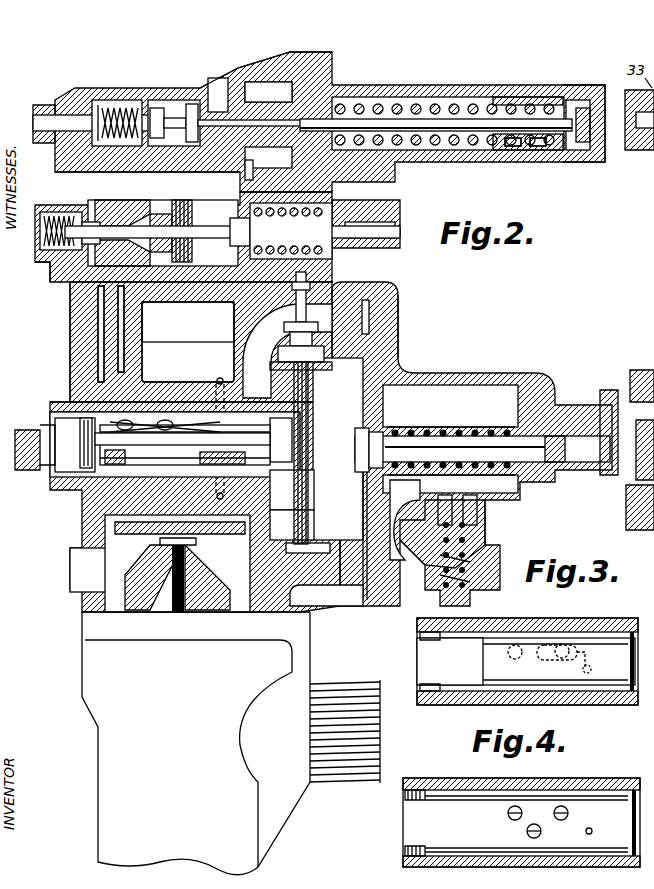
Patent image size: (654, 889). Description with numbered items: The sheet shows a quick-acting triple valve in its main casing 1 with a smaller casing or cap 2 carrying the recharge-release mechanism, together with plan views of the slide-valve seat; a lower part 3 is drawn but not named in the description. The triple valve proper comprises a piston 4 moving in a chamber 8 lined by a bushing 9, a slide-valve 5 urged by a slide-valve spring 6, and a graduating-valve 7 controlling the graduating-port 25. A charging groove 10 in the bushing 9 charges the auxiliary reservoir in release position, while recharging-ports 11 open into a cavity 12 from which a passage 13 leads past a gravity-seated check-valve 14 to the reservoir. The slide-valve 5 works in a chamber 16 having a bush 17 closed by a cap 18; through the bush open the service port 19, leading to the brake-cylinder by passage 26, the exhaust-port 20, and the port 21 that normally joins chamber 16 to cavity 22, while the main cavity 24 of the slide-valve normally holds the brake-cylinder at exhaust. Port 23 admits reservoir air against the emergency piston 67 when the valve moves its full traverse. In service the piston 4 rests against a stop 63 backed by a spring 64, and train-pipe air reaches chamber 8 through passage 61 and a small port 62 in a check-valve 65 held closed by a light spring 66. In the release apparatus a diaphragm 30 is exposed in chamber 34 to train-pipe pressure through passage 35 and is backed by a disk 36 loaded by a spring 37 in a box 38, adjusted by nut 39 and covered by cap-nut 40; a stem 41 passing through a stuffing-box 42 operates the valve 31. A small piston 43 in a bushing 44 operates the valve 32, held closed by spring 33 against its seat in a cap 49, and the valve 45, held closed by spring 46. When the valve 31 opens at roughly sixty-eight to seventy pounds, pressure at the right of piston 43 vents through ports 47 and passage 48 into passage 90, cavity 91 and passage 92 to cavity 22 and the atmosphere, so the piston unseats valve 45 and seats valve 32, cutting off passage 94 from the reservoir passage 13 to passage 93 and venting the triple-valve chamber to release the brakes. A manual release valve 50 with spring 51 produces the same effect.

In FIG. 3, the main casing 1 is at (70, 355).
In FIG. 3, the smaller casing or cap 2 is at (398, 350).
In FIG. 3, the pipe 3 is at (231, 743).
In FIG. 3, the piston 4 is at (314, 480).
In FIG. 3, the slide-valve 5 is at (100, 460).
In FIG. 4, the slide-valve 5 is at (480, 662).
In FIG. 3, the slide-valve spring 6 is at (136, 422).
In FIG. 3, the graduating-valve 7 is at (192, 448).
In FIG. 3, the chamber 8 is at (338, 449).
In FIG. 3, the bushing 9 is at (355, 540).
In FIG. 3, the charging groove or passage 10 is at (296, 356).
In FIG. 3, the recharging-ports 11 is at (310, 368).
In FIG. 3, the cavity 12 is at (332, 362).
In FIG. 3, the passage 13 is at (62, 398).
In FIG. 3, the check-valve 14 is at (312, 292).
In FIG. 3, the chamber 16 is at (173, 445).
In FIG. 3, the bush 17 is at (196, 415).
In FIG. 4, the bush 17 is at (622, 698).
In FIG. 3, the cap 18 is at (642, 413).
In FIG. 3, the service port 19 is at (150, 525).
In FIG. 4, the service port 19 is at (490, 640).
In FIG. 4, the exhaust-port 20 is at (565, 635).
In FIG. 3, the port 21 is at (258, 498).
In FIG. 4, the port 21 is at (593, 668).
In FIG. 3, the cavity 22 is at (292, 525).
In FIG. 4, the port 23 is at (556, 831).
In FIG. 3, the main cavity 24 is at (172, 530).
In FIG. 4, the main cavity 24 is at (595, 648).
In FIG. 3, the graduating-port 25 is at (123, 458).
In FIG. 3, the passage 26 is at (85, 564).
In FIG. 2, the diaphragm 30 is at (285, 58).
In FIG. 2, the valve 31 is at (170, 110).
In FIG. 2, the valve 32 is at (60, 268).
In FIG. 2, the spring 33 is at (42, 232).
In FIG. 2, the chamber 34 is at (268, 92).
In FIG. 2, the passage 35 is at (252, 162).
In FIG. 3, the passage 35 is at (372, 318).
In FIG. 2, the disk or piston 36 is at (470, 132).
In FIG. 2, the spring 37 is at (440, 106).
In FIG. 2, the box 38 is at (520, 150).
In FIG. 2, the adjusting-nut 39 is at (540, 150).
In FIG. 2, the cap-nut 40 is at (588, 92).
In FIG. 2, the stem 41 is at (242, 90).
In FIG. 2, the air-tight bushing or stuffing-box 42 is at (222, 88).
In FIG. 2, the small piston 43 is at (190, 242).
In FIG. 3, the bushing 44 is at (190, 303).
In FIG. 2, the additional valve 45 is at (248, 222).
In FIG. 2, the spring 46 is at (345, 205).
In FIG. 2, the ports 47 is at (190, 215).
In FIG. 2, the passage 48 is at (75, 168).
In FIG. 2, the cap 49 is at (116, 228).
In FIG. 2, the valve 50 is at (40, 124).
In FIG. 2, the spring 51 is at (112, 100).
In FIG. 3, the passage 61 is at (326, 586).
In FIG. 3, the small port 62 is at (455, 495).
In FIG. 3, the stop 63 is at (398, 442).
In FIG. 3, the spring 64 is at (395, 462).
In FIG. 3, the check-valve 65 is at (436, 530).
In FIG. 3, the light spring 66 is at (495, 553).
In FIG. 3, the piston 67 is at (214, 528).
In FIG. 2, the passage 90 is at (322, 218).
In FIG. 3, the passage 90 is at (219, 305).
In FIG. 3, the cavity or chamber 91 is at (188, 342).
In FIG. 3, the passage 92 is at (220, 378).
In FIG. 3, the passage 93 is at (122, 350).
In FIG. 3, the passage 94 is at (98, 318).